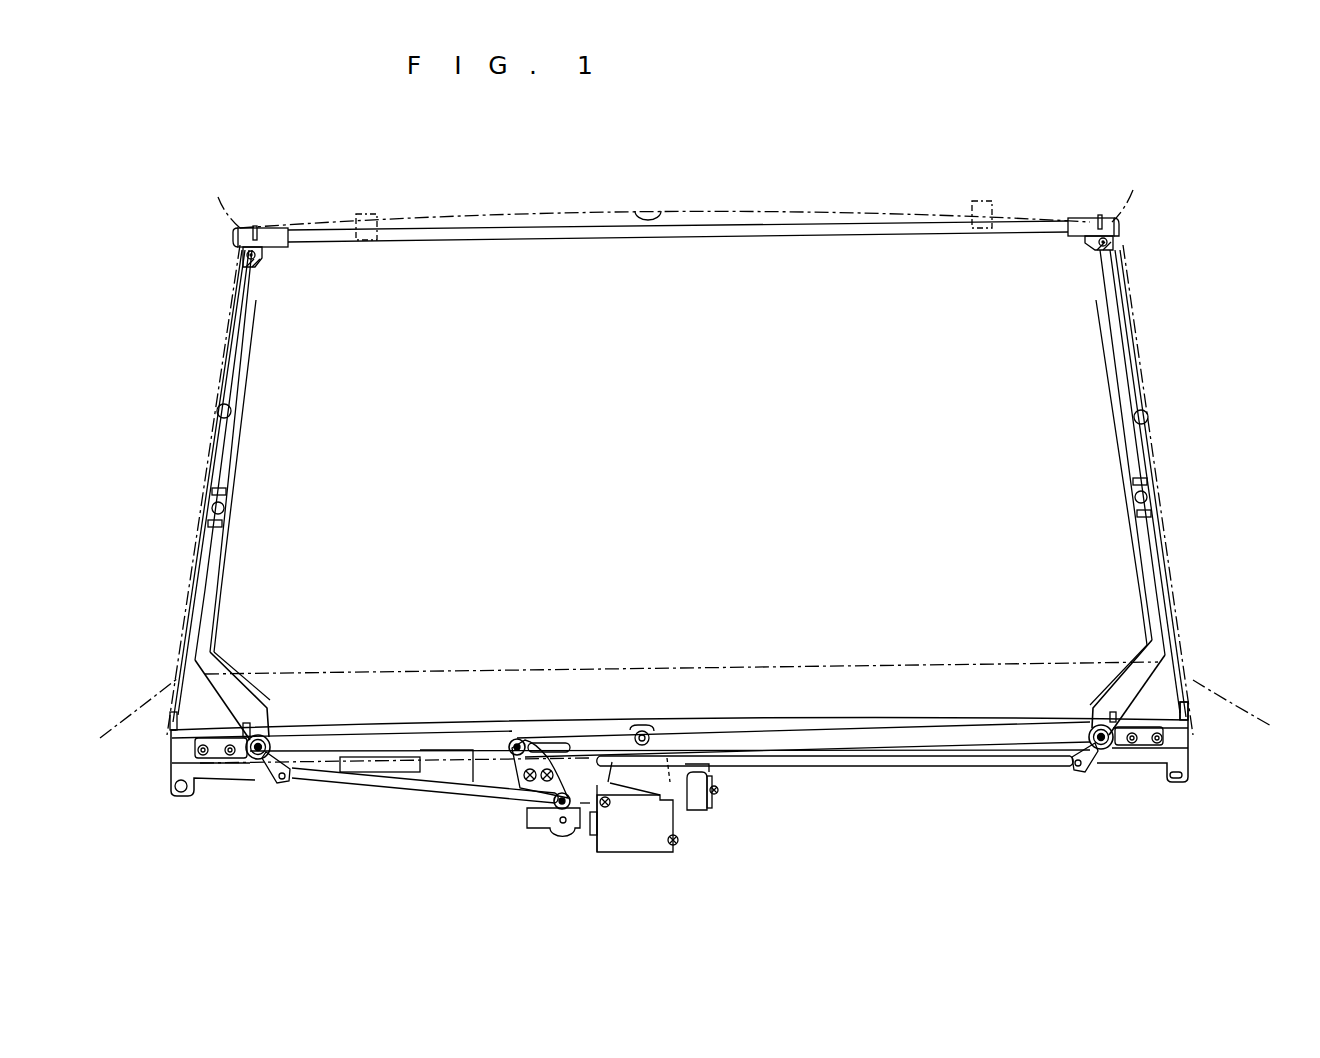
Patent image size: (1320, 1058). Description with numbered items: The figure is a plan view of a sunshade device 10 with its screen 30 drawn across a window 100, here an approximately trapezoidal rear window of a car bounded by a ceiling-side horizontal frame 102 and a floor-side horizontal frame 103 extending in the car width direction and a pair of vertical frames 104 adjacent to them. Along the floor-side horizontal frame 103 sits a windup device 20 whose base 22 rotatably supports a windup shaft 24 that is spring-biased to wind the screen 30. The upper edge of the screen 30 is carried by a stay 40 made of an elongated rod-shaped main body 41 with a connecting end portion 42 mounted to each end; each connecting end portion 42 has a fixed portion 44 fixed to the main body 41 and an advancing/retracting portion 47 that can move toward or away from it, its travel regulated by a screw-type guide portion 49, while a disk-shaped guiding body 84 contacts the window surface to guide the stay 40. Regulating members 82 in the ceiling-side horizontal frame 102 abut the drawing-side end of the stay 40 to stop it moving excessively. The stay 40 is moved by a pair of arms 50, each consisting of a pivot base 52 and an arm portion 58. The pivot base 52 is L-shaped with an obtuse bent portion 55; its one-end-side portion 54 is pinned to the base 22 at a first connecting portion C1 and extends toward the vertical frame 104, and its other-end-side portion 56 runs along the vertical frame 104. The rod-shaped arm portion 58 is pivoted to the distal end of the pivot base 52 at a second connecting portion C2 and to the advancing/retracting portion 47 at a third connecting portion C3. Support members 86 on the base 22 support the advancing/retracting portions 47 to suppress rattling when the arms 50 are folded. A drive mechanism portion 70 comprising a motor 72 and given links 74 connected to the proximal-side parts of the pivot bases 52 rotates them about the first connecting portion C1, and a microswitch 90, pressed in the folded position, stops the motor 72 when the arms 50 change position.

The sunshade device 10 is at (392, 810).
The windup device 20 is at (165, 733).
The base 22 is at (1192, 763).
The windup shaft 24 is at (1186, 700).
The screen 30 is at (213, 463).
The stay 40 is at (777, 220).
The main body 41 is at (845, 224).
The connecting end portion 42 is at (296, 232).
The fixed portion 44 is at (277, 228).
The advancing/retracting portion 47 is at (263, 255).
The guide portion 49 is at (236, 241).
The arm 50 is at (244, 452).
The pivot base 52 is at (220, 606).
The one-end-side portion 54 is at (262, 698).
The bent portion 55 is at (190, 658).
The other-end-side portion 56 is at (219, 568).
The arm portion 58 is at (246, 402).
The drive mechanism portion 70 is at (505, 816).
The motor 72 is at (568, 758).
The given link 74 is at (437, 800).
The regulating member 82 is at (366, 210).
The guiding body 84 is at (255, 228).
The support member 86 is at (243, 727).
The microswitch 90 is at (710, 805).
The window 100 is at (730, 214).
The ceiling-side horizontal frame 102 is at (660, 209).
The floor-side horizontal frame 103 is at (745, 670).
The vertical frame 104 is at (220, 408).
The first connecting portion C1 is at (258, 760).
The second connecting portion C2 is at (226, 508).
The third connecting portion C3 is at (256, 259).